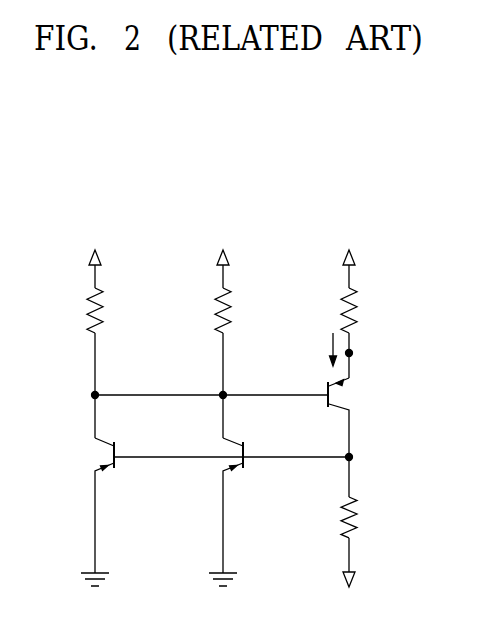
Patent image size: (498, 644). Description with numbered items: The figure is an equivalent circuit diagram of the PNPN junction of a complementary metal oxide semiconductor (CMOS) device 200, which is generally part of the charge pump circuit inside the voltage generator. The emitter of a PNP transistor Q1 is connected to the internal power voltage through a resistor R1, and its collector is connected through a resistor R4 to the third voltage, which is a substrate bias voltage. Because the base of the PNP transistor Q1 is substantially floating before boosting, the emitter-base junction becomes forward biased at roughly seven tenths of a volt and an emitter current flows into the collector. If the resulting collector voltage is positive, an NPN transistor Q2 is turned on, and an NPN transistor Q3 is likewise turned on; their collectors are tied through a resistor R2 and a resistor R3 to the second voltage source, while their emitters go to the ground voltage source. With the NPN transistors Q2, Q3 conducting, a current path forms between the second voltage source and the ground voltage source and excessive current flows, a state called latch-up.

The CMOS device 200 is at (323, 182).
The resistor R1 is at (333, 310).
The resistor R2 is at (208, 310).
The resistor R3 is at (79, 310).
The resistor R4 is at (333, 517).
The PNP transistor Q1 is at (352, 437).
The NPN transistor Q2 is at (217, 505).
The NPN transistor Q3 is at (92, 505).